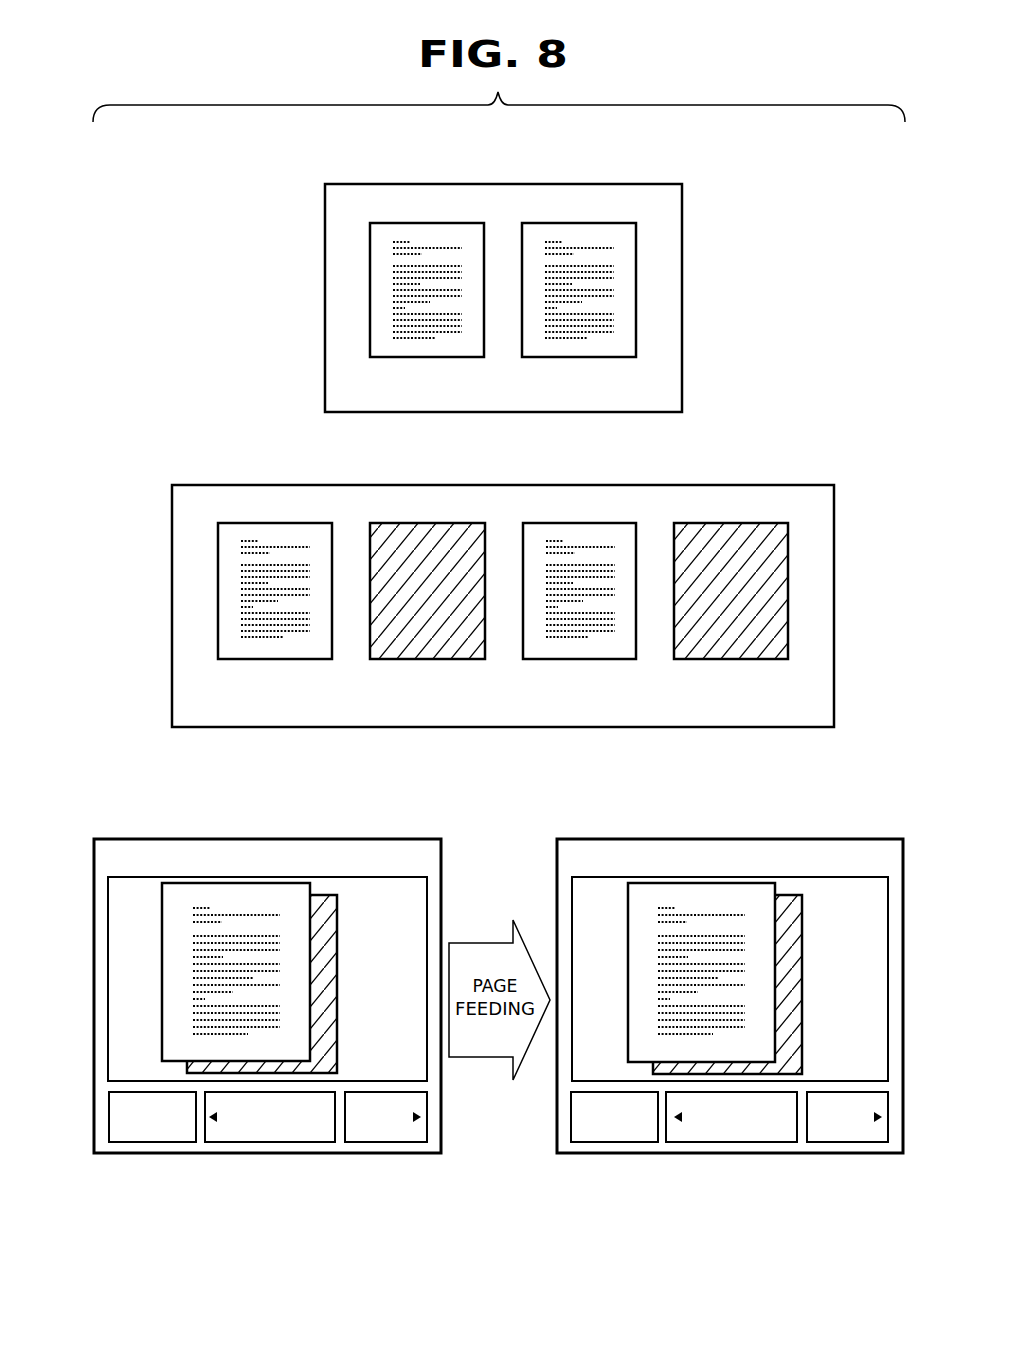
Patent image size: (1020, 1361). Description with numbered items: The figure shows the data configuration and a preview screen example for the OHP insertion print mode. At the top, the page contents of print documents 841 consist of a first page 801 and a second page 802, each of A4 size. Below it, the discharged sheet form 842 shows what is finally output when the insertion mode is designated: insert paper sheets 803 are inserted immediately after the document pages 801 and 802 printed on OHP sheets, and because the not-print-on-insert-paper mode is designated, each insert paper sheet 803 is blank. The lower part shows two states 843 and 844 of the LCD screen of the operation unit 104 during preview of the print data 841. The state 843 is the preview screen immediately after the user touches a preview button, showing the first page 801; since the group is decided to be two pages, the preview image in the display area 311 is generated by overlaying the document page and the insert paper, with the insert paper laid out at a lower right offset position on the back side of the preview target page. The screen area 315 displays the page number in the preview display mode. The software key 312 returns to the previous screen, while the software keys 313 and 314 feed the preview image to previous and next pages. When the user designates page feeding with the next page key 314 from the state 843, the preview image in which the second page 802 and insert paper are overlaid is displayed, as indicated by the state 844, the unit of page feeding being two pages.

The page contents of print documents 841 is at (676, 155).
The discharged sheet form 842 is at (838, 457).
The preview screen state 843 is at (433, 812).
The preview screen state 844 is at (896, 812).
The page 1 801 is at (458, 358).
The page 2 802 is at (610, 358).
The insert paper sheet 803 is at (452, 660).
The screen area 315 is at (238, 838).
The operation unit 104 is at (557, 858).
The display area of a preview image 311 is at (583, 915).
The software key 312 is at (148, 1143).
The previous page key 313 is at (264, 1143).
The next page key 314 is at (376, 1143).